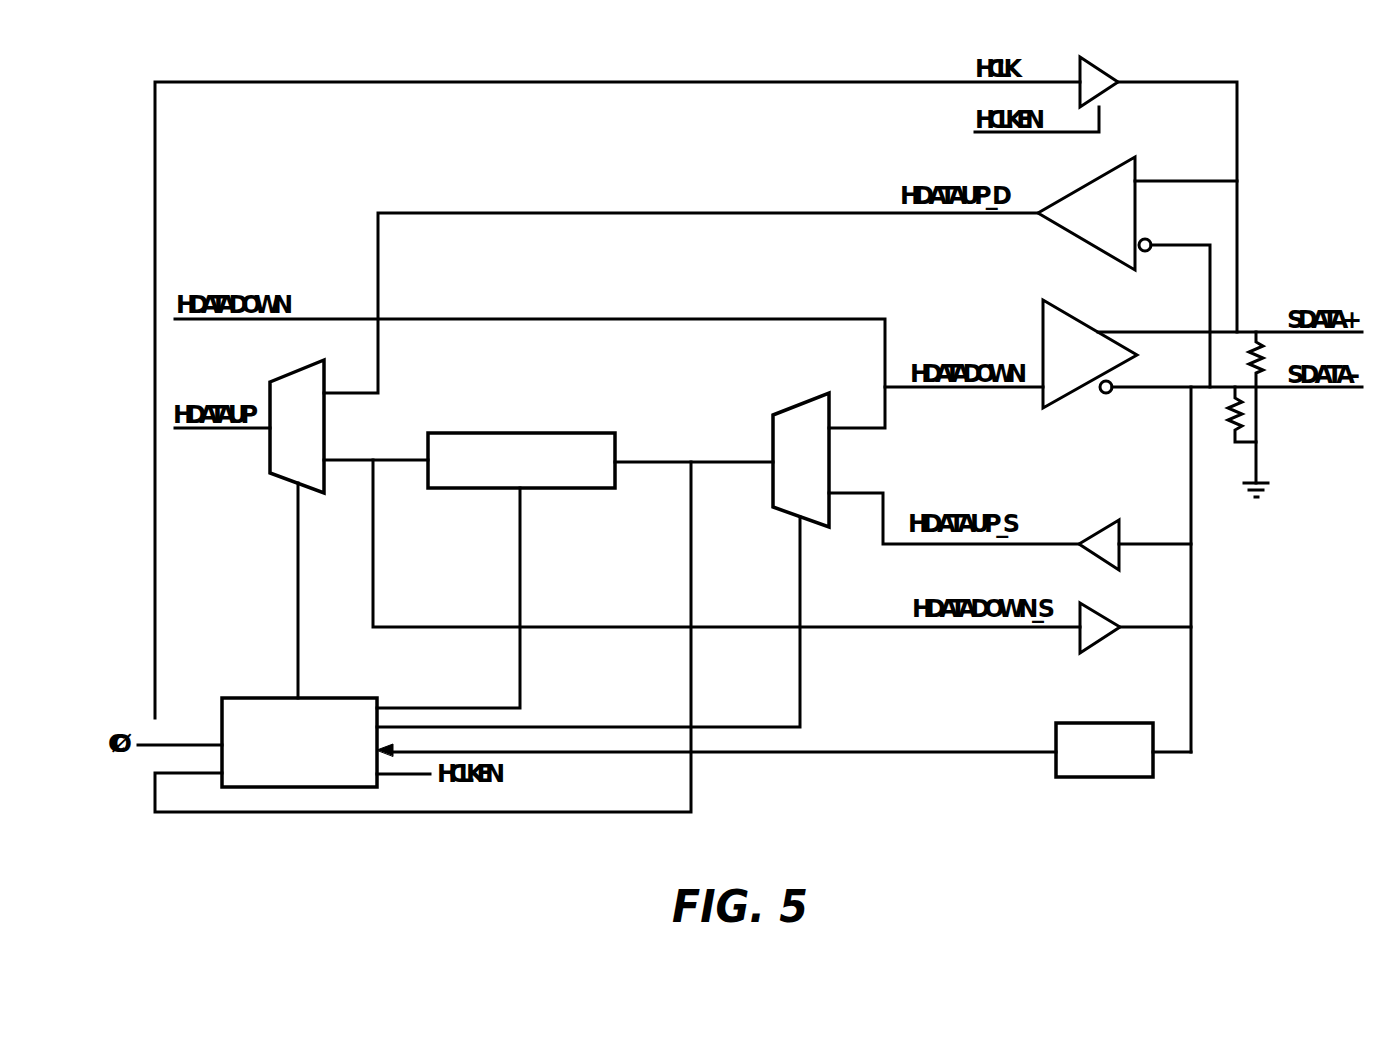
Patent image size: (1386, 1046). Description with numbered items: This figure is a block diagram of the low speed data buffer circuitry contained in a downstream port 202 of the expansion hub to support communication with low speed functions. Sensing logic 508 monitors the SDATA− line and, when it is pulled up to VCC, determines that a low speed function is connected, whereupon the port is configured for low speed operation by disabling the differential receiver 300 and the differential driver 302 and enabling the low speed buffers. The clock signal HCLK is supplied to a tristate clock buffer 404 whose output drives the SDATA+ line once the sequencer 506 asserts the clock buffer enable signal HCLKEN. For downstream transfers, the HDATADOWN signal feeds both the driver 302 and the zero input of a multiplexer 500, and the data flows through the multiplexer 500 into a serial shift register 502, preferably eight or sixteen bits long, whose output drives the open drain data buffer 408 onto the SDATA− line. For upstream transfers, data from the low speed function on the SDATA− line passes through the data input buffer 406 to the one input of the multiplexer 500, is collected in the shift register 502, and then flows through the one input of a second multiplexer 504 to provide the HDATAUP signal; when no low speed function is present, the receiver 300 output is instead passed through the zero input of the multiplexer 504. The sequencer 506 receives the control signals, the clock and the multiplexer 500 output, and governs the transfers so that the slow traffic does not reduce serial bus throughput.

The port 202 is at (1017, 817).
The differential receiver 300 is at (1097, 180).
The differential driver 302 is at (1068, 310).
The tristate clock buffer 404 is at (1098, 66).
The data input buffer 406 is at (1103, 530).
The open drain data buffer 408 is at (1100, 642).
The multiplexer 500 is at (802, 402).
The serial shift register 502 is at (467, 432).
The multiplexer 504 is at (297, 368).
The sequencer 506 is at (252, 697).
The sensing logic 508 is at (1070, 723).